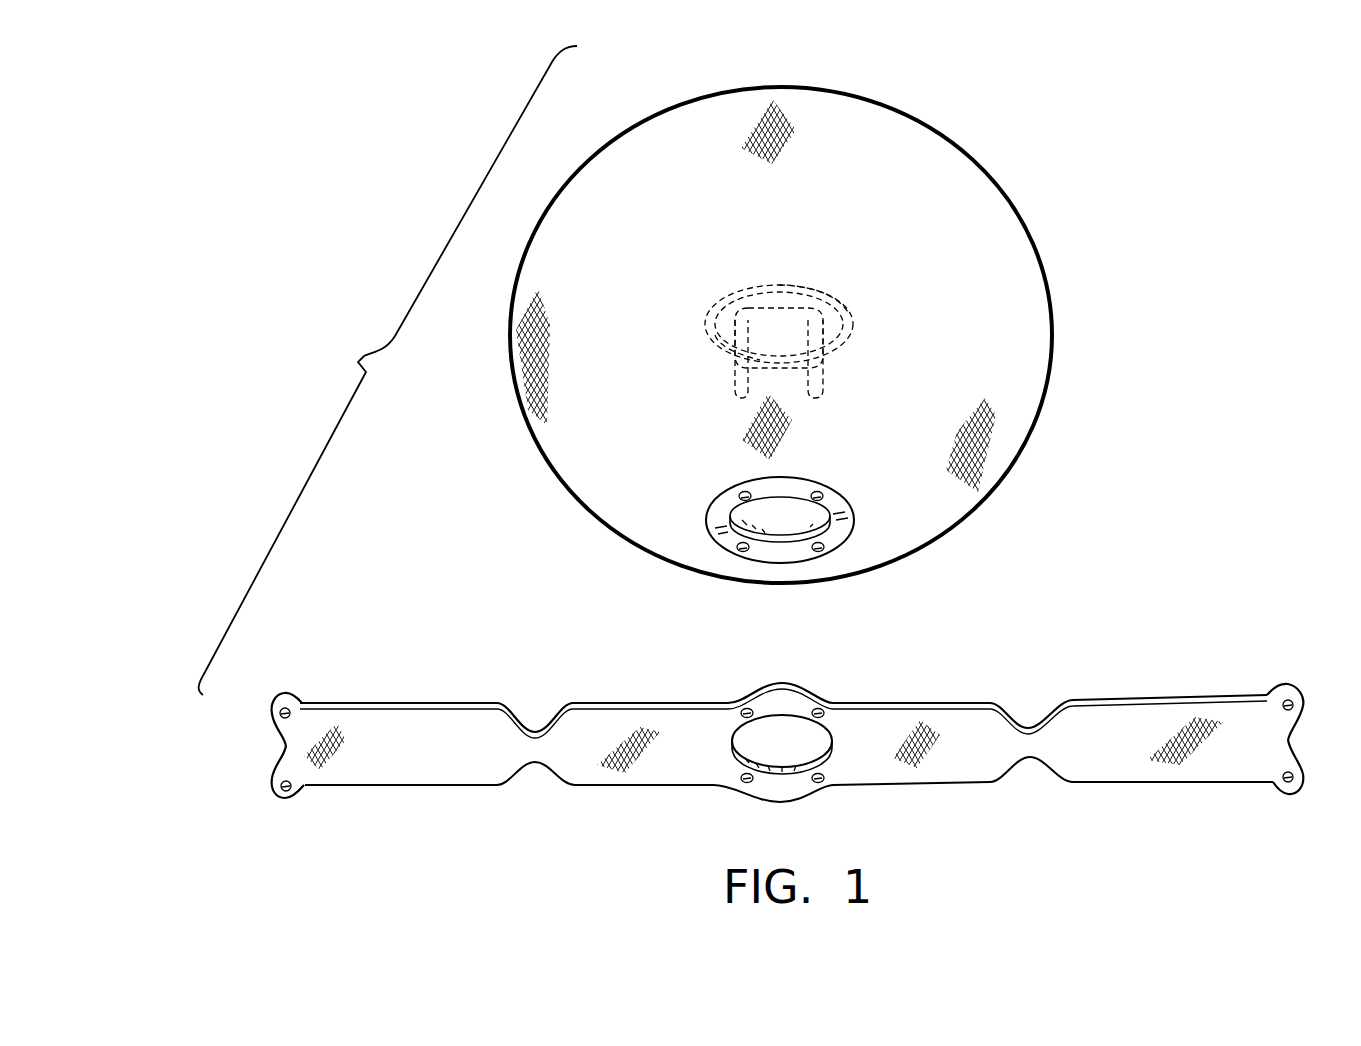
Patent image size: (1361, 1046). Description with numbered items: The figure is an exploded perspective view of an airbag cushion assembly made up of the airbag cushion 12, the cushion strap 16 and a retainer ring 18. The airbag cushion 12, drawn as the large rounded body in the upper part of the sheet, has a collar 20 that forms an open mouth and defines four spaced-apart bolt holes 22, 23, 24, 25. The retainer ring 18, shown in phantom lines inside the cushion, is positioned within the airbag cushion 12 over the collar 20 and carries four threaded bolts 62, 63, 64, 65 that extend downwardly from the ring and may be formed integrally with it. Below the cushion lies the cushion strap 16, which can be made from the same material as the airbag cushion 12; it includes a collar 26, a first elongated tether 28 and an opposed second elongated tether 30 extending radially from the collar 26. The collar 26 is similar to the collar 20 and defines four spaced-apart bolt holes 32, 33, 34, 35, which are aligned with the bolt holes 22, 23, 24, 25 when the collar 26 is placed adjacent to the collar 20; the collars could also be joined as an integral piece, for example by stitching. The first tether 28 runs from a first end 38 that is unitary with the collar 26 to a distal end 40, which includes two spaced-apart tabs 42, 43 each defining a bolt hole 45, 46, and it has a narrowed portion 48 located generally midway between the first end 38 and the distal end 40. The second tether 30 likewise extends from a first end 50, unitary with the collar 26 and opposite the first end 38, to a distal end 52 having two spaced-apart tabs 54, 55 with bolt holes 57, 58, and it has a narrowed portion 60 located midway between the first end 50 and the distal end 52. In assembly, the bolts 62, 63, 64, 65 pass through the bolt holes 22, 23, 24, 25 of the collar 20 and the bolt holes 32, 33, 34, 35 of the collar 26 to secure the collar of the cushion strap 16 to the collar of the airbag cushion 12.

The airbag cushion 12 is at (1052, 186).
The cushion strap 16 is at (970, 658).
The retainer ring 18 is at (766, 287).
The collar 20 is at (713, 530).
The bolt hole 22 is at (740, 494).
The bolt hole 23 is at (822, 494).
The bolt hole 24 is at (748, 551).
The bolt hole 25 is at (822, 549).
The collar 26 is at (787, 795).
The first tether 28 is at (474, 786).
The second tether 30 is at (1102, 783).
The bolt hole 32 is at (741, 707).
The bolt hole 33 is at (824, 706).
The bolt hole 34 is at (743, 784).
The bolt hole 35 is at (823, 785).
The first end 38 is at (708, 787).
The distal end 40 is at (283, 748).
The tab 42 is at (282, 698).
The tab 43 is at (293, 794).
The bolt hole 45 is at (279, 728).
The bolt hole 46 is at (284, 796).
The narrowed portion 48 is at (535, 765).
The first end 50 is at (878, 785).
The distal end 52 is at (1289, 740).
The tab 54 is at (1302, 692).
The tab 55 is at (1297, 790).
The bolt hole 57 is at (1295, 722).
The bolt hole 58 is at (1277, 783).
The narrowed portion 60 is at (1029, 759).
The threaded bolt 62 is at (713, 343).
The threaded bolt 63 is at (832, 305).
The threaded bolt 64 is at (733, 384).
The threaded bolt 65 is at (826, 384).